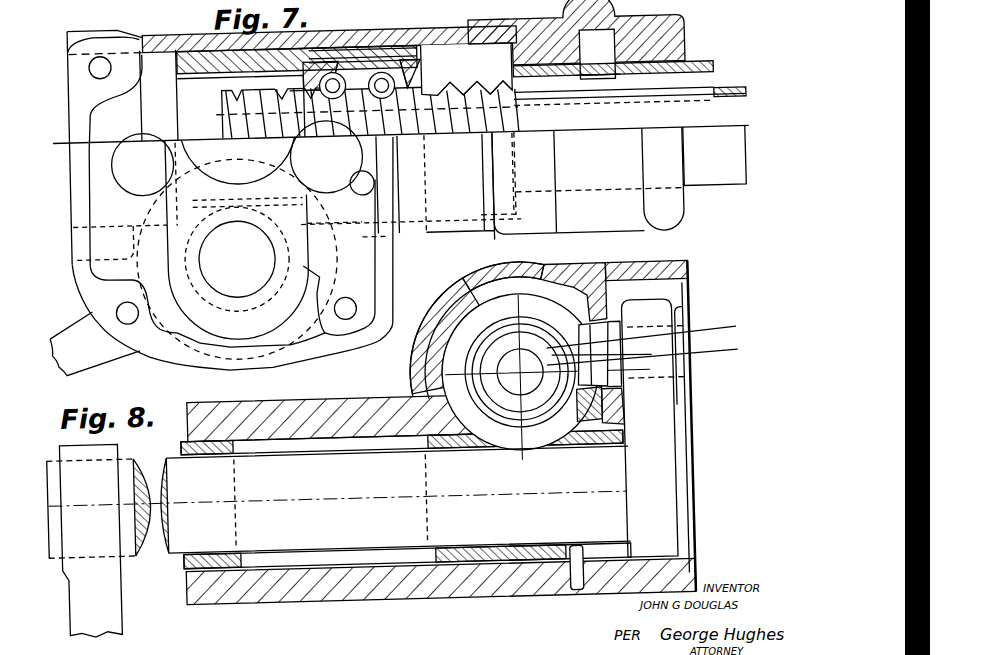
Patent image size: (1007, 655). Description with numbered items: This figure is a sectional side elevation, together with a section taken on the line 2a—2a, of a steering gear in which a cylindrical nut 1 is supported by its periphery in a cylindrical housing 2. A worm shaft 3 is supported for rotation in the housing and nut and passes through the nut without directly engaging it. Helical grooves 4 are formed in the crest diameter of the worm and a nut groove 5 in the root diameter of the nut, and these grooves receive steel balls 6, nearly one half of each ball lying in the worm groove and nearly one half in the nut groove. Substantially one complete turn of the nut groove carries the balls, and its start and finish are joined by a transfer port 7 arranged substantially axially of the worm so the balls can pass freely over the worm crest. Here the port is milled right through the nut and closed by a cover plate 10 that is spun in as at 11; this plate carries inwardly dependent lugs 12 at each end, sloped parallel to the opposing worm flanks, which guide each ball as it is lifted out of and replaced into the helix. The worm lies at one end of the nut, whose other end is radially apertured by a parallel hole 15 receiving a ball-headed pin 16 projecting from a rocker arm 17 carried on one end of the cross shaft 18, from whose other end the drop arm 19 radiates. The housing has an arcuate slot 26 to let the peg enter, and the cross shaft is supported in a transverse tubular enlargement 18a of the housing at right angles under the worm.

In FIG. 7, the cylindrical nut 1 is at (430, 74).
In FIG. 8, the cylindrical nut 1 is at (440, 355).
In FIG. 7, the cylindrical housing 2 is at (174, 103).
In FIG. 8, the cylindrical housing 2 is at (438, 329).
In FIG. 7, the section line 2a is at (298, 92).
In FIG. 8, the section line 2a is at (247, 362).
In FIG. 7, the worm shaft 3 is at (474, 128).
In FIG. 8, the worm shaft 3 is at (512, 403).
In FIG. 7, the helical grooves 4 is at (447, 118).
In FIG. 8, the helical grooves 4 is at (519, 413).
In FIG. 7, the nut groove 5 is at (394, 173).
In FIG. 7, the steel balls 6 is at (389, 88).
In FIG. 7, the transfer port 7 is at (380, 43).
In FIG. 7, the cover plate 10 is at (360, 42).
In FIG. 7, the spun-in securing 11 is at (418, 44).
In FIG. 7, the inwardly dependent lugs 12 is at (458, 38).
In FIG. 8, the parallel hole 15 is at (571, 337).
In FIG. 7, the ball-headed pin 16 is at (195, 145).
In FIG. 8, the ball-headed pin 16 is at (612, 334).
In FIG. 7, the rocker arm 17 is at (182, 193).
In FIG. 8, the rocker arm 17 is at (638, 469).
In FIG. 7, the cross shaft 18 is at (255, 252).
In FIG. 8, the cross shaft 18 is at (336, 455).
In FIG. 8, the transverse tubular enlargement 18a is at (285, 417).
In FIG. 7, the drop arm 19 is at (107, 348).
In FIG. 8, the drop arm 19 is at (97, 585).
In FIG. 7, the arcuate slot 26 is at (110, 207).